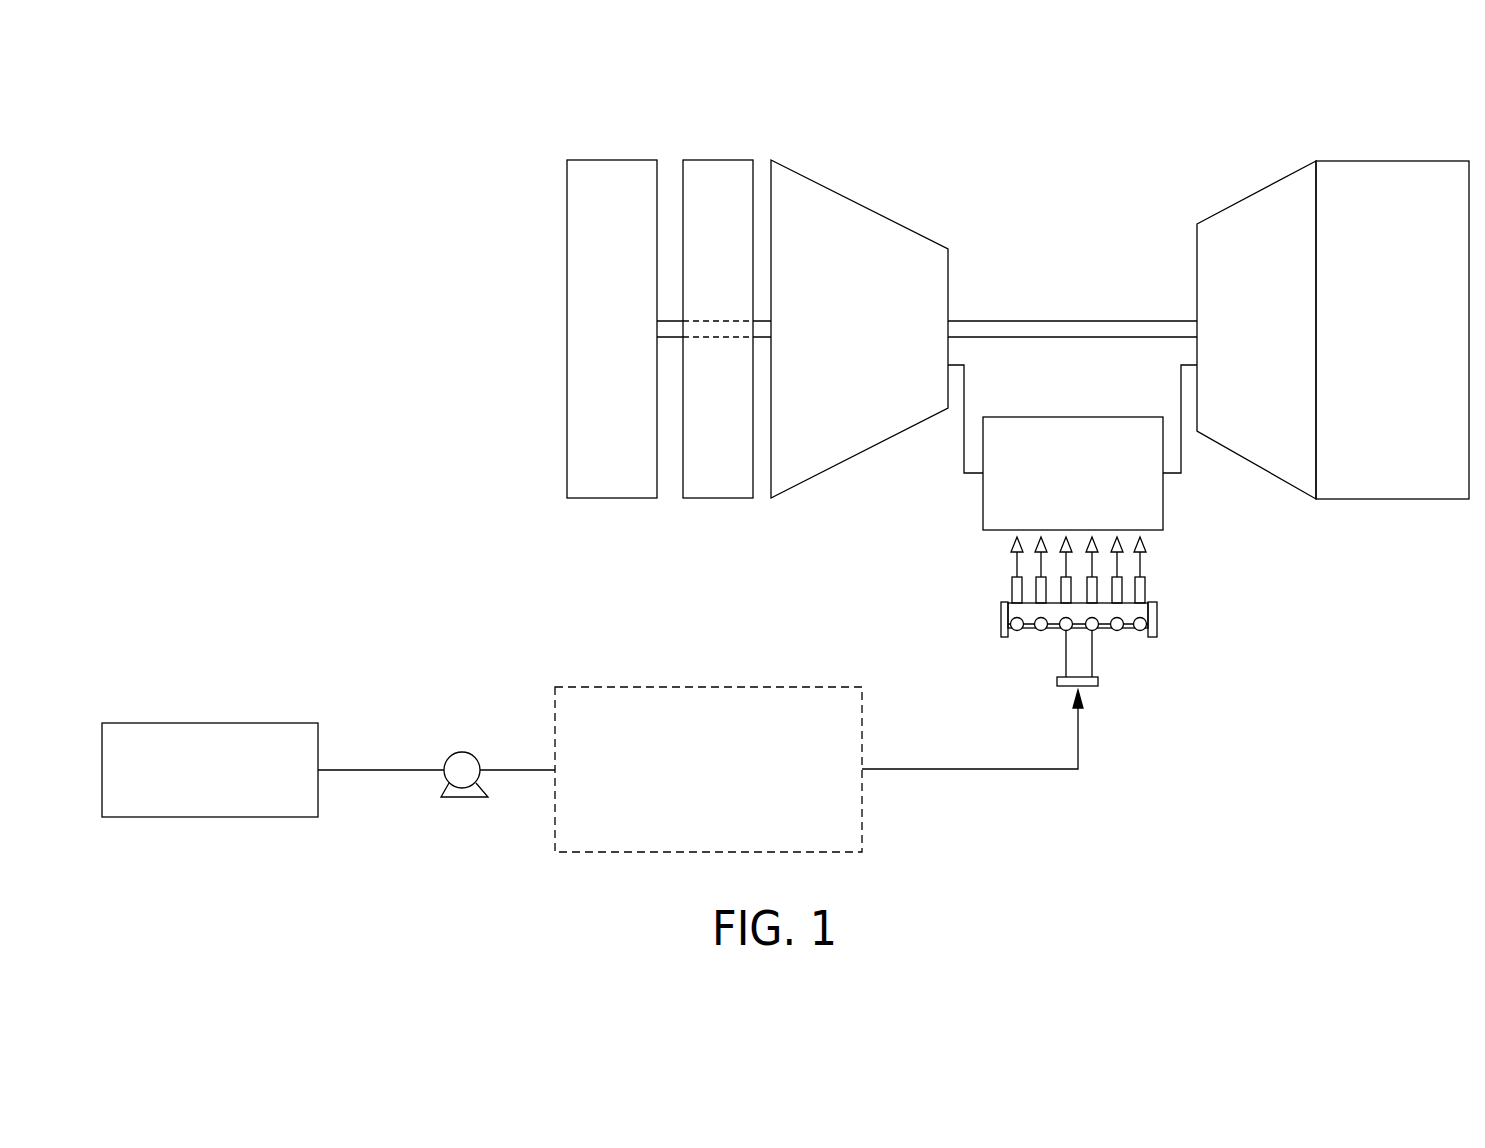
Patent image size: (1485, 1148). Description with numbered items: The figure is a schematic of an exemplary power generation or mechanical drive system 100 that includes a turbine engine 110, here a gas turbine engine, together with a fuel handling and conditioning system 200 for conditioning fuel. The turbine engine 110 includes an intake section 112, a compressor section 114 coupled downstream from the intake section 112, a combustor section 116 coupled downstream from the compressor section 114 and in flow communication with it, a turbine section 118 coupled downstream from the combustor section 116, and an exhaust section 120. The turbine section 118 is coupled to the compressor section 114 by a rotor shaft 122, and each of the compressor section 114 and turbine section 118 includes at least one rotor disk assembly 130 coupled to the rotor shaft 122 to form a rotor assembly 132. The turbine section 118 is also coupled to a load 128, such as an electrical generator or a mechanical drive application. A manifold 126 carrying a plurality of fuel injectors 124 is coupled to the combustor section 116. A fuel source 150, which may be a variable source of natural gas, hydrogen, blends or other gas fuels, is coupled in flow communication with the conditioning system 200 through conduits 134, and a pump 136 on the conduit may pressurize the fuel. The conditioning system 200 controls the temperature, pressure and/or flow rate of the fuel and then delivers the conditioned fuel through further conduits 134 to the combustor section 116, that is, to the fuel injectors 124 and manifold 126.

The power generation or mechanical drive system 100 is at (516, 121).
The turbine engine 110 is at (992, 130).
The intake section 112 is at (717, 160).
The compressor section 114 is at (853, 457).
The combustor section 116 is at (1045, 520).
The turbine section 118 is at (1247, 462).
The exhaust section 120 is at (1375, 161).
The rotor shaft 122 is at (1047, 321).
The fuel injector 124 is at (1146, 588).
The manifold 126 is at (1001, 611).
The load 128 is at (612, 160).
The rotor disk assembly 130 is at (1291, 146).
The rotor assembly 132 is at (1249, 158).
The conduits 134 is at (382, 768).
The pump 136 is at (465, 752).
The fuel source 150 is at (185, 806).
The fuel handling and conditioning system 200 is at (678, 836).